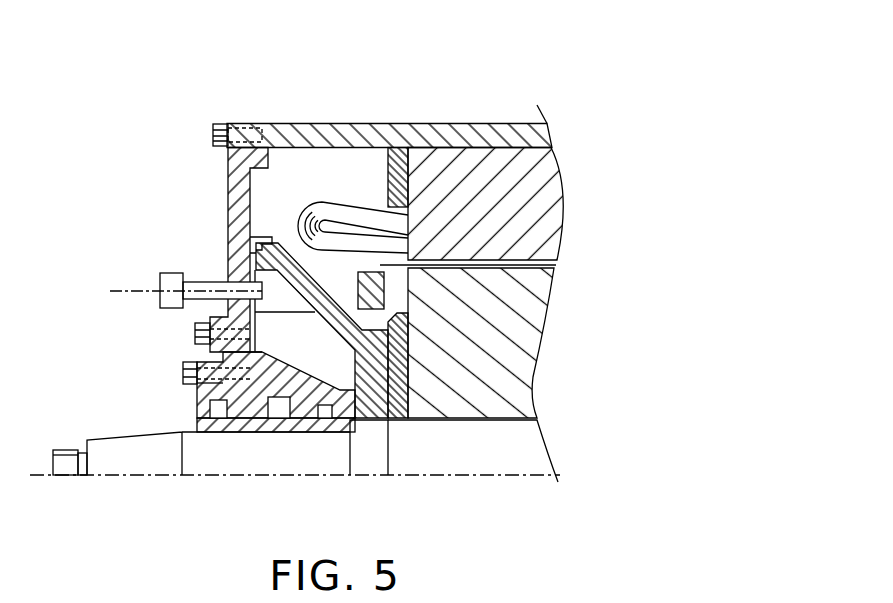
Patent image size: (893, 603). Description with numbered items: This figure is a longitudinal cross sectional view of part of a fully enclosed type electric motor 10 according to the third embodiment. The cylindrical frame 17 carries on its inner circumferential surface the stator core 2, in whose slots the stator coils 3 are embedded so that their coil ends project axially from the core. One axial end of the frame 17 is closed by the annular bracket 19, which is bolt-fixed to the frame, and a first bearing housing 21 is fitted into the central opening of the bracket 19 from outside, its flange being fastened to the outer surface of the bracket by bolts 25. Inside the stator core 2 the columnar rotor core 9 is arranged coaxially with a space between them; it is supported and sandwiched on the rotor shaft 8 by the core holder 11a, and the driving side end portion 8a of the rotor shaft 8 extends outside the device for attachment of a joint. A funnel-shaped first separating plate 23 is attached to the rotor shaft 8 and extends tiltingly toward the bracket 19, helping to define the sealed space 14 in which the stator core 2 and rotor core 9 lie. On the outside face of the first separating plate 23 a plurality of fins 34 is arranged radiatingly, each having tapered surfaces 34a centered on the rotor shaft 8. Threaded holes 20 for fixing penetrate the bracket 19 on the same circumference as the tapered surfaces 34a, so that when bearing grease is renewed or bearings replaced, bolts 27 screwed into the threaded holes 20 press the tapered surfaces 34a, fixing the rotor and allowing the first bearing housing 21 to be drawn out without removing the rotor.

The electric motor 10 is at (458, 92).
The sealed space 14 is at (312, 163).
The frame 17 is at (409, 147).
The stator core 2 is at (502, 157).
The bracket 19 is at (228, 164).
The threaded holes for fixing 20 is at (250, 270).
The stator coils 3 is at (356, 215).
The first separating plate 23 is at (348, 333).
The fins 34 is at (288, 298).
The tapered surfaces 34a is at (260, 311).
The bolts 25 is at (195, 333).
The first bearing housing 21 is at (185, 373).
The bolts for fixing the rotor 27 is at (160, 291).
The rotor shaft 8 is at (466, 465).
The driving side end portion 8a is at (114, 470).
The core holder 11a is at (397, 423).
The rotor core 9 is at (510, 423).